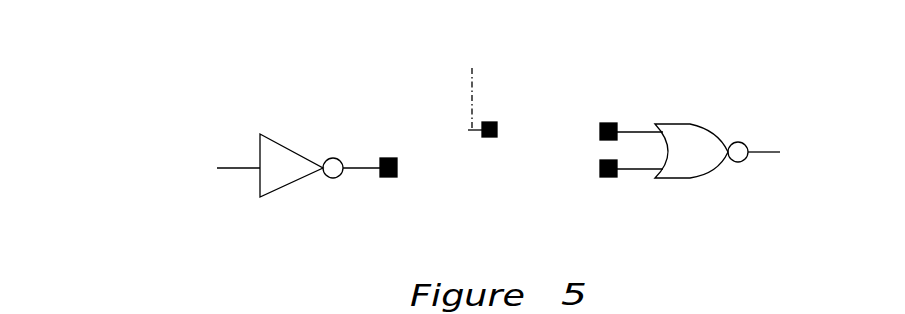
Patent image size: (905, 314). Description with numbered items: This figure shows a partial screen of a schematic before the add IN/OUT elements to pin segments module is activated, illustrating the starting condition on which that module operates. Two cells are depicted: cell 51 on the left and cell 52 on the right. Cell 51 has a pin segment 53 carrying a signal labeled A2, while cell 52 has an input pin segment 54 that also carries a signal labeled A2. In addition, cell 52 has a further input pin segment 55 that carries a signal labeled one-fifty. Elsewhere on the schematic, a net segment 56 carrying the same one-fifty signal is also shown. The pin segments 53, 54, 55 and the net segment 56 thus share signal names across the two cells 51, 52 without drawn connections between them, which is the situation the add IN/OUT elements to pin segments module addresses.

The cell 51 is at (287, 187).
The cell 52 is at (708, 172).
The pin segment 53 is at (392, 178).
The input pin segment 54 is at (615, 178).
The input pin segment 55 is at (610, 123).
The net segment 56 is at (487, 122).